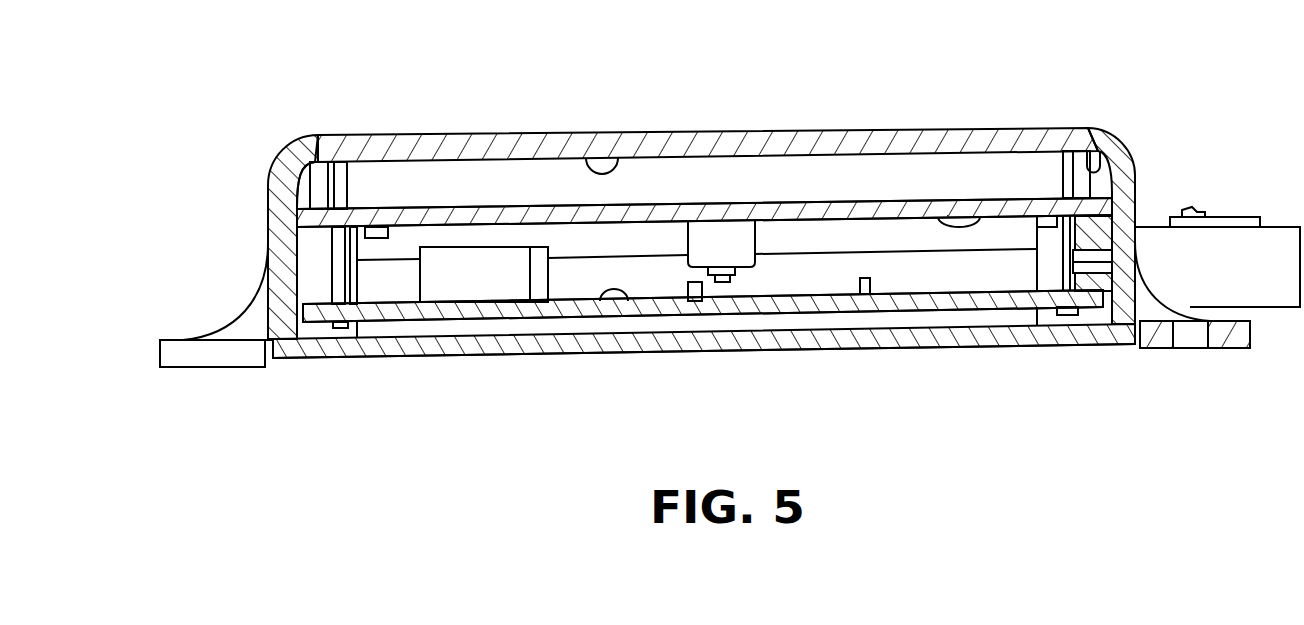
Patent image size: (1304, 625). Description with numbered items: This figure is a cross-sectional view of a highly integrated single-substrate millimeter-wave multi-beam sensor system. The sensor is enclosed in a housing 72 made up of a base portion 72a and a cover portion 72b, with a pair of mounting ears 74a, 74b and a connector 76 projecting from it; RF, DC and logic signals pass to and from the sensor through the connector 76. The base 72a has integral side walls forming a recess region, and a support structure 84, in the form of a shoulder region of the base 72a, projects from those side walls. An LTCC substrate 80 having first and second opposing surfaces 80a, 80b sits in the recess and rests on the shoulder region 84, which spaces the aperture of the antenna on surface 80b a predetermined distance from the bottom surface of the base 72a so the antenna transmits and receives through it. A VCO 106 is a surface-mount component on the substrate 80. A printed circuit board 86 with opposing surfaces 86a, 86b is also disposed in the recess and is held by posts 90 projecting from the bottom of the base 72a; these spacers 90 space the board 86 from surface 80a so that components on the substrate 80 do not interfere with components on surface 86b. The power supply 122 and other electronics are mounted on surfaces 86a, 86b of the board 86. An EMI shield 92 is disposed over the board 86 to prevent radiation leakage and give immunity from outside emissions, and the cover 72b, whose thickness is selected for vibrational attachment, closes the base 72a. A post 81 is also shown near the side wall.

The housing 72 is at (384, 133).
The base portion 72a is at (520, 134).
The cover portion 72b is at (891, 349).
The mounting ear 74a is at (160, 350).
The mounting ear 74b is at (1160, 350).
The connector 76 is at (1240, 217).
The LTCC substrate 80 is at (856, 200).
The first surface of LTCC substrate 80a is at (938, 207).
The second surface of LTCC substrate 80b is at (1013, 198).
The standoff post 81 is at (333, 149).
The support structure 84 is at (294, 204).
The printed circuit board 86 is at (620, 155).
The first surface of printed circuit board 86a is at (590, 317).
The second surface of printed circuit board 86b is at (675, 316).
The posts 90 is at (332, 266).
The EMI shield 92 is at (359, 358).
The VCO 106 is at (716, 219).
The power supply 122 is at (468, 247).